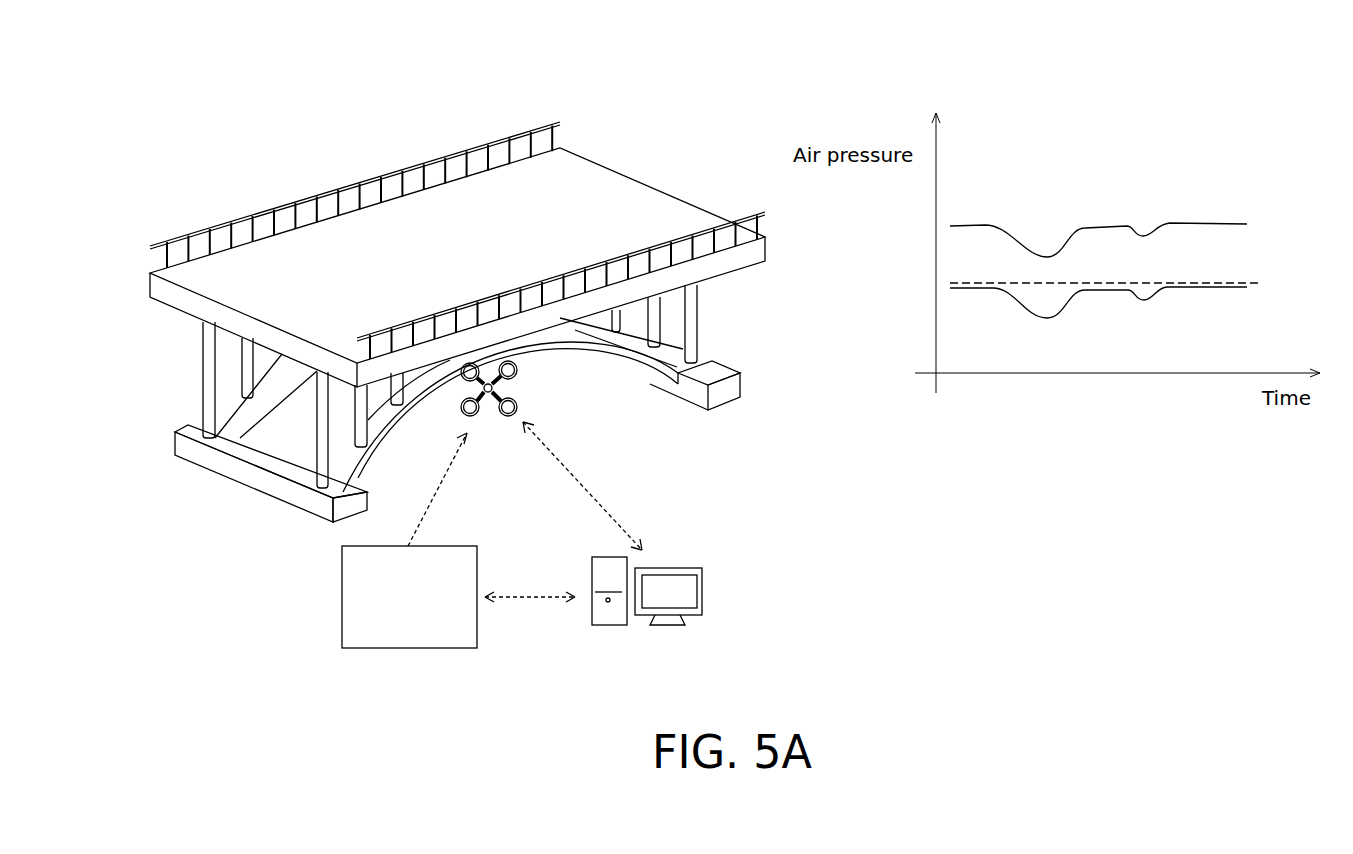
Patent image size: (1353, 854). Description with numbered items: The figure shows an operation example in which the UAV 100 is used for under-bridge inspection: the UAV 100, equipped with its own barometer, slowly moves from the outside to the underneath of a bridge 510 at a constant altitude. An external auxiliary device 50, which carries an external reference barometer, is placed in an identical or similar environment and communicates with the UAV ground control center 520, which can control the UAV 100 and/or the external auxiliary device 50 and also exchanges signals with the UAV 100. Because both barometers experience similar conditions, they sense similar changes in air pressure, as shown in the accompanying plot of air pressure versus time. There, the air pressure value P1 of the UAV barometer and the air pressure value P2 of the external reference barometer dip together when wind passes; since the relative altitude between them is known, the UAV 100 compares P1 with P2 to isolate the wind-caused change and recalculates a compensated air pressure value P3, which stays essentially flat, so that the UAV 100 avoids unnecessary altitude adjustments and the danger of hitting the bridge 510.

The bridge 510 is at (455, 152).
The UAV 100 is at (518, 407).
The external auxiliary device 50 is at (342, 596).
The UAV ground control center 520 is at (607, 628).
The air pressure value of the first barometer P1 is at (1147, 300).
The air pressure value of the external reference barometer P2 is at (1131, 228).
The compensated air pressure value P3 is at (1142, 283).